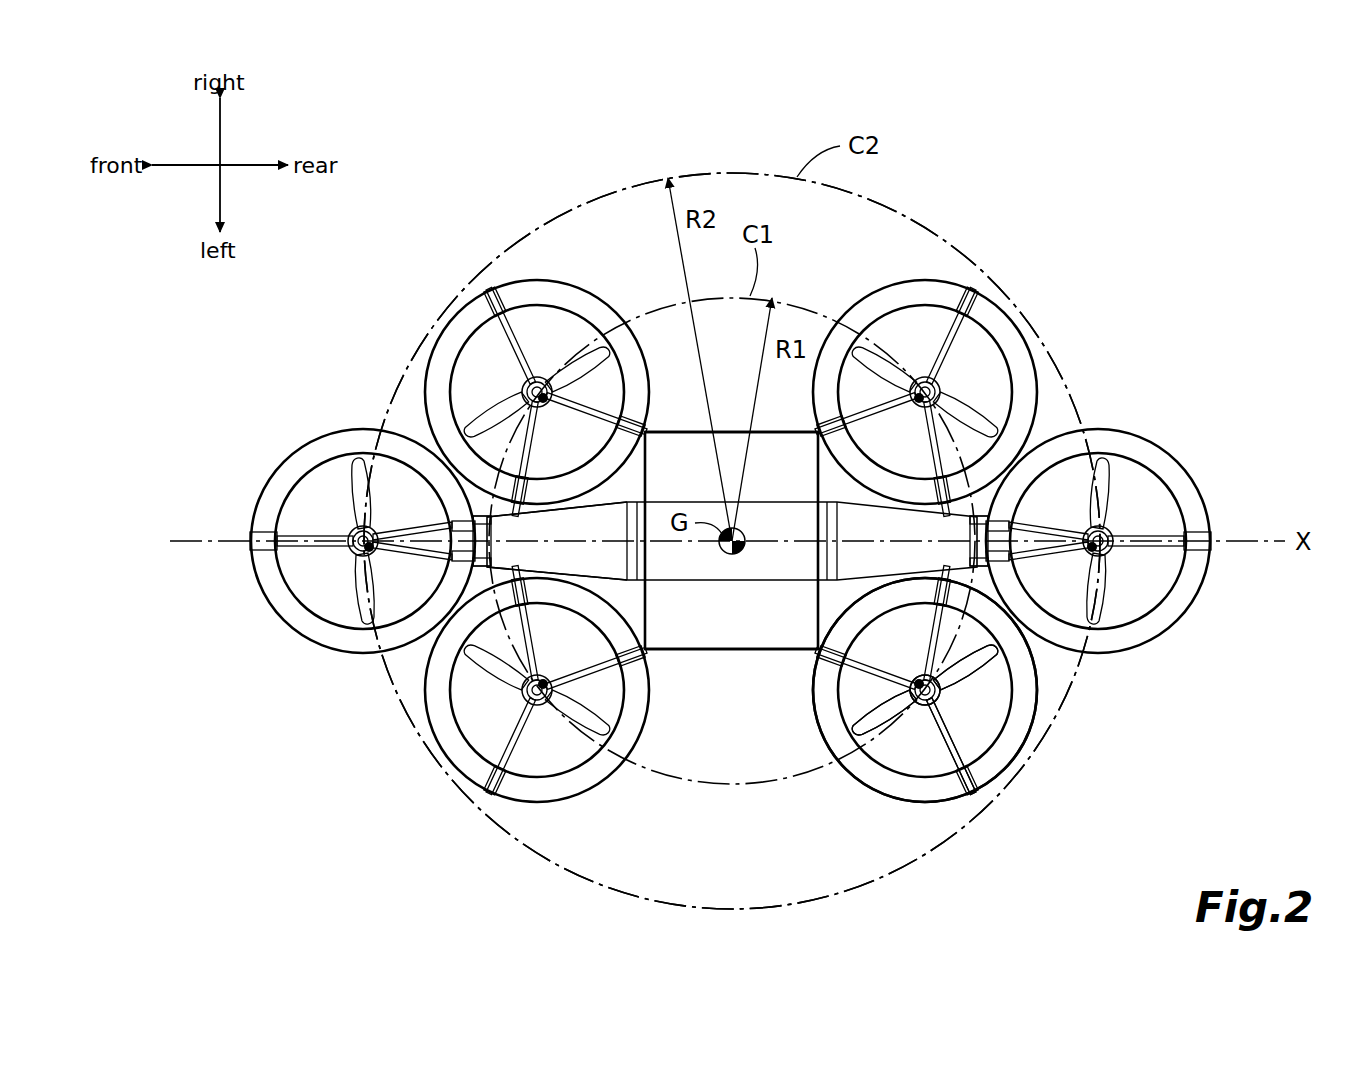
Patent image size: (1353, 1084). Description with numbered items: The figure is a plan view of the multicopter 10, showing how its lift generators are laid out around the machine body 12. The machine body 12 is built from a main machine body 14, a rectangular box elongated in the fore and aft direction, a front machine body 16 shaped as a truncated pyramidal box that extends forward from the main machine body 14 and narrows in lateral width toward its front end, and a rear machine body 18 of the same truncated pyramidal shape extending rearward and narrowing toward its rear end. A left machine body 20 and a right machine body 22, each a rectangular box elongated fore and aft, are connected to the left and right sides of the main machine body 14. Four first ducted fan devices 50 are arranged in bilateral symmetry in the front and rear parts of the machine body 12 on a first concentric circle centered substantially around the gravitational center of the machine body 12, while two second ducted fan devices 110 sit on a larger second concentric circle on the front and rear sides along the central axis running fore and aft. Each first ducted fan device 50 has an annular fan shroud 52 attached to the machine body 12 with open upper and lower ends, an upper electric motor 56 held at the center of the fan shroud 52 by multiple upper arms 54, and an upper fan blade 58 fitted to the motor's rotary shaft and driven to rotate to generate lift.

The multicopter 10 is at (1067, 326).
The machine body 12 is at (787, 652).
The main machine body 14 is at (760, 576).
The front machine body 16 is at (617, 574).
The rear machine body 18 is at (890, 642).
The left machine body 20 is at (713, 650).
The right machine body 22 is at (787, 431).
The first ducted fan device 50 is at (567, 282).
The fan shroud 52 is at (955, 789).
The upper arm 54 is at (947, 744).
The upper electric motor 56 is at (940, 697).
The upper fan blade 58 is at (892, 714).
The second ducted fan device 110 is at (289, 457).